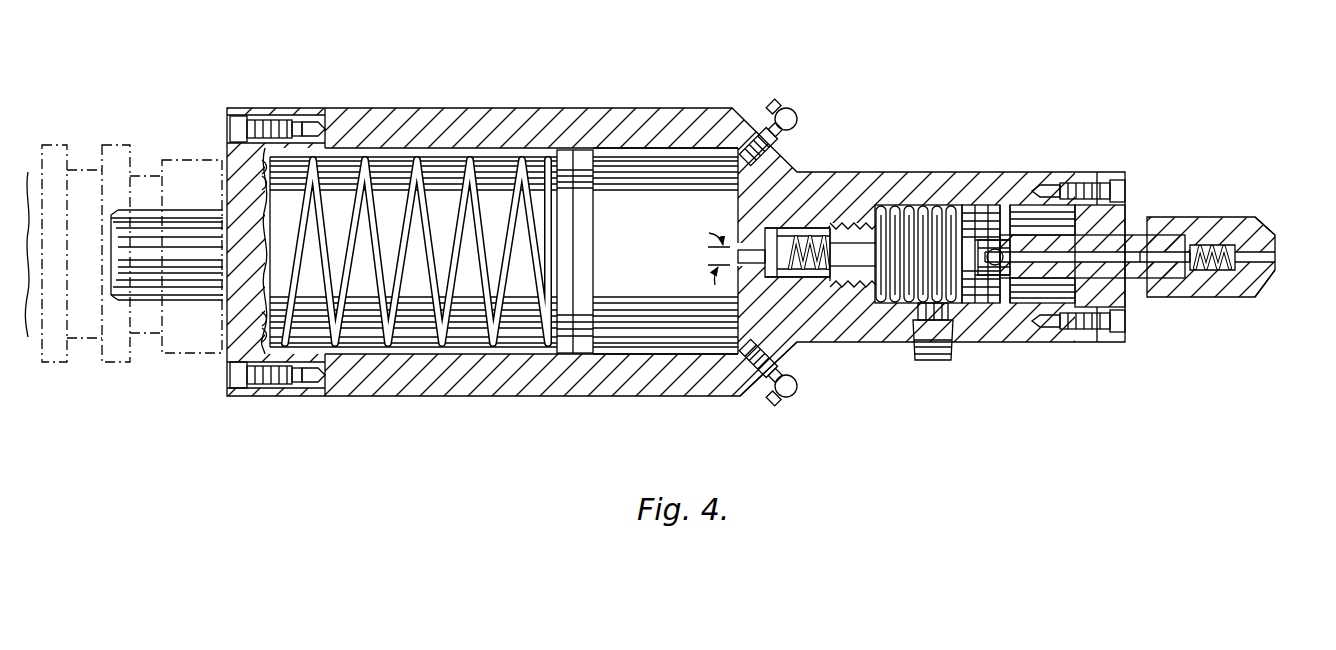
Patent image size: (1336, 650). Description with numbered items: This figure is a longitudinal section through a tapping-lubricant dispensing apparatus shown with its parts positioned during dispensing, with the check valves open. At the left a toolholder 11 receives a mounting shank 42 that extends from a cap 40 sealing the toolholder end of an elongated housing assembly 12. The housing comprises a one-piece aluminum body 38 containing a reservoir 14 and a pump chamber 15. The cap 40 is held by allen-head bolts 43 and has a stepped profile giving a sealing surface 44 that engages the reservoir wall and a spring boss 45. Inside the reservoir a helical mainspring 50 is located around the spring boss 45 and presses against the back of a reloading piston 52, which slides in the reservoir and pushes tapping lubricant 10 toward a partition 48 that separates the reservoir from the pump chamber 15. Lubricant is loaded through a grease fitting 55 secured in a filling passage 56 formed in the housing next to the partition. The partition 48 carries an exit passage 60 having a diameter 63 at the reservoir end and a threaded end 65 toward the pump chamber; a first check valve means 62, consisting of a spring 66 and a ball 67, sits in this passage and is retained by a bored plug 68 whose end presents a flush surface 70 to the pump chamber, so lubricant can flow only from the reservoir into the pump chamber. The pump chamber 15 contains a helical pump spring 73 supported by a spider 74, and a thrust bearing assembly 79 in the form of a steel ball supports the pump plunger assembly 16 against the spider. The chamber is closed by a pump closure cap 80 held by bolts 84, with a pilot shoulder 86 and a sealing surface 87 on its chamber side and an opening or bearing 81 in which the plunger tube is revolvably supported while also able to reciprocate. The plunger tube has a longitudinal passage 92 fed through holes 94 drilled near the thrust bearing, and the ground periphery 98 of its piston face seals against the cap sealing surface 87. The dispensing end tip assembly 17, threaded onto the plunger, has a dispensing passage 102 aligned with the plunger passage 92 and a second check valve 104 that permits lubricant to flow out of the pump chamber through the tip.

The tapping lubricant 10 is at (658, 266).
The toolholder 11 is at (131, 362).
The elongated housing assembly 12 is at (668, 325).
The reservoir 14 is at (455, 216).
The pump chamber 15 is at (1000, 230).
The pump plunger assembly 16 is at (1148, 250).
The dispensing end tip assembly 17 is at (668, 325).
The body 38 is at (510, 108).
The cap 40 is at (237, 108).
The mounting shank 42 is at (152, 210).
The bolts 43 is at (228, 133).
The sealing surface 44 is at (266, 160).
The spring boss 45 is at (283, 223).
The partition 48 is at (780, 216).
The helical mainspring 50 is at (440, 350).
The reloading piston 52 is at (575, 251).
The grease fitting 55 is at (798, 110).
The filling passage 56 is at (743, 153).
The exit passage 60 is at (800, 280).
The first check valve means 62 is at (850, 382).
The diameter 63 is at (860, 130).
The threaded end 65 is at (899, 200).
The spring 66 is at (850, 382).
The ball 67 is at (795, 355).
The plug 68 is at (852, 215).
The flush surface 70 is at (983, 207).
The helical pump spring 73 is at (908, 303).
The spider 74 is at (943, 320).
The thrust bearing assembly 79 is at (1030, 230).
The pump closure cap 80 is at (1133, 278).
The opening or bearing 81 is at (1120, 233).
The bolts 84 is at (1125, 332).
The pilot shoulder 86 is at (1070, 333).
The sealing surface 87 is at (1055, 303).
The longitudinal passage 92 is at (1140, 264).
The holes 94 is at (995, 268).
The periphery 98 is at (1060, 230).
The dispensing passage 102 is at (1260, 220).
The second check valve 104 is at (1194, 245).